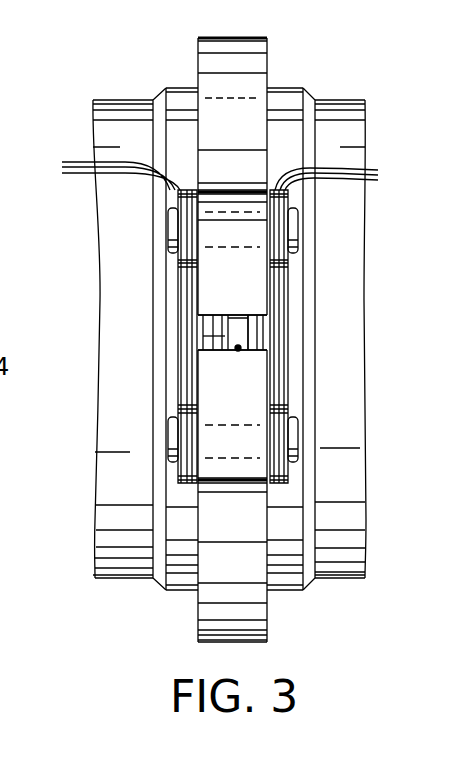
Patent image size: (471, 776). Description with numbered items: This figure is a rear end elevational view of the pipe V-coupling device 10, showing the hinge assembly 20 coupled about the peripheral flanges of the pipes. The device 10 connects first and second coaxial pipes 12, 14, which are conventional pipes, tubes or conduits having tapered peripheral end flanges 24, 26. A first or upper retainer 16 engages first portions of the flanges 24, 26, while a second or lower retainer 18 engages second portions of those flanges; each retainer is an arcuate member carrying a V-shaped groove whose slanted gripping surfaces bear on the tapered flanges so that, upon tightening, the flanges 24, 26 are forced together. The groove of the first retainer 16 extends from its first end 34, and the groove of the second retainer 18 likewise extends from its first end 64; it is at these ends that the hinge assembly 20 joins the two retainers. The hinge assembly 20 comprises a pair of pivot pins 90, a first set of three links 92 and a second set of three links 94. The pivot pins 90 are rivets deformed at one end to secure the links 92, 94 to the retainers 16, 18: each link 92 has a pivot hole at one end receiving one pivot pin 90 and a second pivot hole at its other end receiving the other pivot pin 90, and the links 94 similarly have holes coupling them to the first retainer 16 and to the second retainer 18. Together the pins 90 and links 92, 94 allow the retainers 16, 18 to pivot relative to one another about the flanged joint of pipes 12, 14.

The pipe V-coupling device 10 is at (184, 73).
The first pipe 12 is at (123, 98).
The second pipe 14 is at (340, 100).
The first retainer 16 is at (271, 58).
The second retainer 18 is at (272, 610).
The hinge assembly 20 is at (166, 295).
The peripheral end flange 24 is at (213, 338).
The peripheral end flange 26 is at (262, 333).
The first end 34 is at (262, 322).
The first end 64 is at (240, 350).
The pivot pins 90 is at (298, 218).
The first set of links 92 is at (343, 175).
The second set of links 94 is at (100, 171).